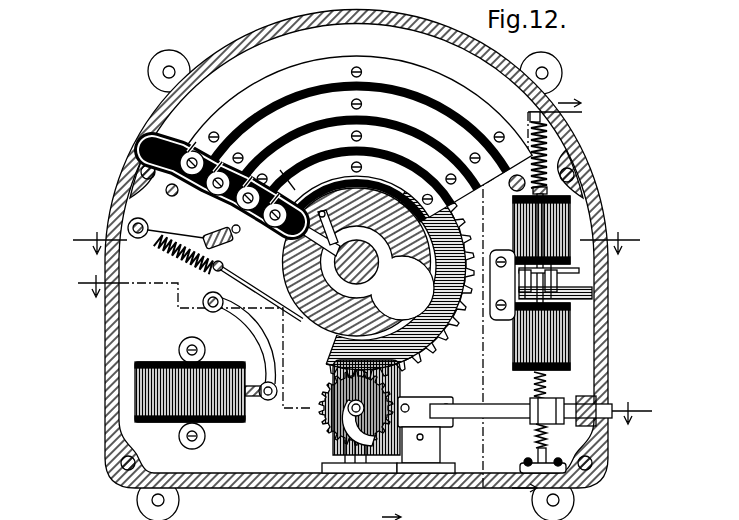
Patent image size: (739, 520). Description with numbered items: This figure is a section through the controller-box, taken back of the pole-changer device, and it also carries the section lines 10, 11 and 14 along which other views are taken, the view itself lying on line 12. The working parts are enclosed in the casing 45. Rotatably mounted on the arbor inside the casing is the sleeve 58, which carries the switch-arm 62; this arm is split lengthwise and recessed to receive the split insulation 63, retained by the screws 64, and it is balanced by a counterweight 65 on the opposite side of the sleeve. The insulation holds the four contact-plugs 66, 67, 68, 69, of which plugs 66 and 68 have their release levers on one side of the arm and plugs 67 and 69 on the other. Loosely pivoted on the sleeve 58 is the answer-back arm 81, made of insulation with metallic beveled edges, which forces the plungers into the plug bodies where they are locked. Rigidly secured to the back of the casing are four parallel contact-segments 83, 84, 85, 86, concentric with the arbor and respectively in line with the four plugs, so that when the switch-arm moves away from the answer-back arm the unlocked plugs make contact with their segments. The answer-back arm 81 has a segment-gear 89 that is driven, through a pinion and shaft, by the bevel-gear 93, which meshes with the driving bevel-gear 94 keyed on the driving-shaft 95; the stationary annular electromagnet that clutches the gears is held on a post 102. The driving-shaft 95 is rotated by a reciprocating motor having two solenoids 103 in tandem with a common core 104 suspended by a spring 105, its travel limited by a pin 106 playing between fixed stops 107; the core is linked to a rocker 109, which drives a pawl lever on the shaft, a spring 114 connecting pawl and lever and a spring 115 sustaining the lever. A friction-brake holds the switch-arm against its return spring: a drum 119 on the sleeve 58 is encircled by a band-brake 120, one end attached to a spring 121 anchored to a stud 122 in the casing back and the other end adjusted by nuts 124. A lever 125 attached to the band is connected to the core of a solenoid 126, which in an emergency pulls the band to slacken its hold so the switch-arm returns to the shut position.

The section line 10 10 is at (354, 243).
The section line 11 11 is at (368, 349).
The section line 12 12 is at (388, 507).
The section line 14 14 is at (546, 307).
The casing 45 is at (105, 441).
The sleeve 58 is at (377, 268).
The switch-arm 62 is at (304, 262).
The split insulation 63 is at (280, 170).
The screws 64 is at (170, 142).
The counterweight 65 is at (402, 288).
The contact-plug 66 is at (144, 214).
The contact-plug 67 is at (176, 226).
The contact-plug 68 is at (237, 232).
The contact-plug 69 is at (224, 266).
The answer-back arm 81 is at (326, 236).
The contact-segment 83 is at (357, 127).
The contact-segment 84 is at (357, 151).
The contact-segment 85 is at (356, 170).
The contact-segment 86 is at (357, 193).
The segment-gear 89 is at (430, 350).
The bevel-gear 93 is at (338, 414).
The driving bevel-gear 94 is at (401, 382).
The driving-shaft 95 is at (484, 400).
The post 102 is at (342, 456).
The solenoids 103 is at (567, 205).
The core 104 is at (562, 274).
The spring 105 is at (560, 150).
The pin 106 is at (593, 289).
The fixed stops 107 is at (517, 278).
The rocker 109 is at (538, 456).
The spring 114 is at (547, 434).
The spring 115 is at (546, 381).
The drum 119 is at (333, 320).
The band-brake 120 is at (284, 308).
The spring 121 is at (190, 261).
The stud 122 is at (130, 222).
The nuts 124 is at (210, 238).
The lever 125 is at (228, 322).
The solenoid 126 is at (226, 422).